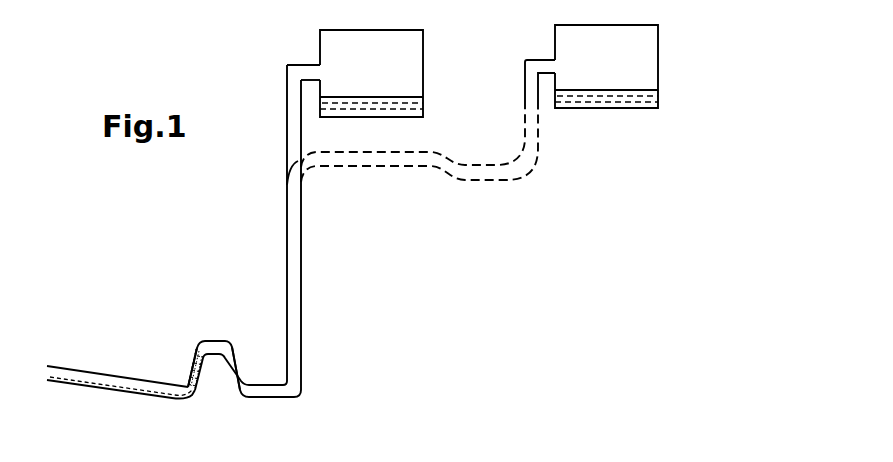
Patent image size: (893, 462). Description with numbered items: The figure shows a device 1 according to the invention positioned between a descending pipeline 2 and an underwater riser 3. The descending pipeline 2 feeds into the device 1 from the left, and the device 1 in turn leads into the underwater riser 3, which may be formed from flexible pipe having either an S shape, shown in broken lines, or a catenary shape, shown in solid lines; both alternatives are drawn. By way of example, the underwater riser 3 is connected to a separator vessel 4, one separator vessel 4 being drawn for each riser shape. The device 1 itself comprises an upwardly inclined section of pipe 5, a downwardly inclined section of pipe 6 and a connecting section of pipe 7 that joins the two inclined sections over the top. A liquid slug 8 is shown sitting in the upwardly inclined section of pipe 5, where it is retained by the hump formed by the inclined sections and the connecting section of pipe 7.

The device 1 is at (217, 383).
The descending pipeline 2 is at (127, 393).
The underwater riser 3 is at (301, 228).
The separator vessel 4 is at (423, 75).
The upwardly inclined section of pipe 5 is at (187, 367).
The downwardly inclined section of pipe 6 is at (242, 365).
The connecting section of pipe 7 is at (213, 340).
The liquid slug 8 is at (198, 390).